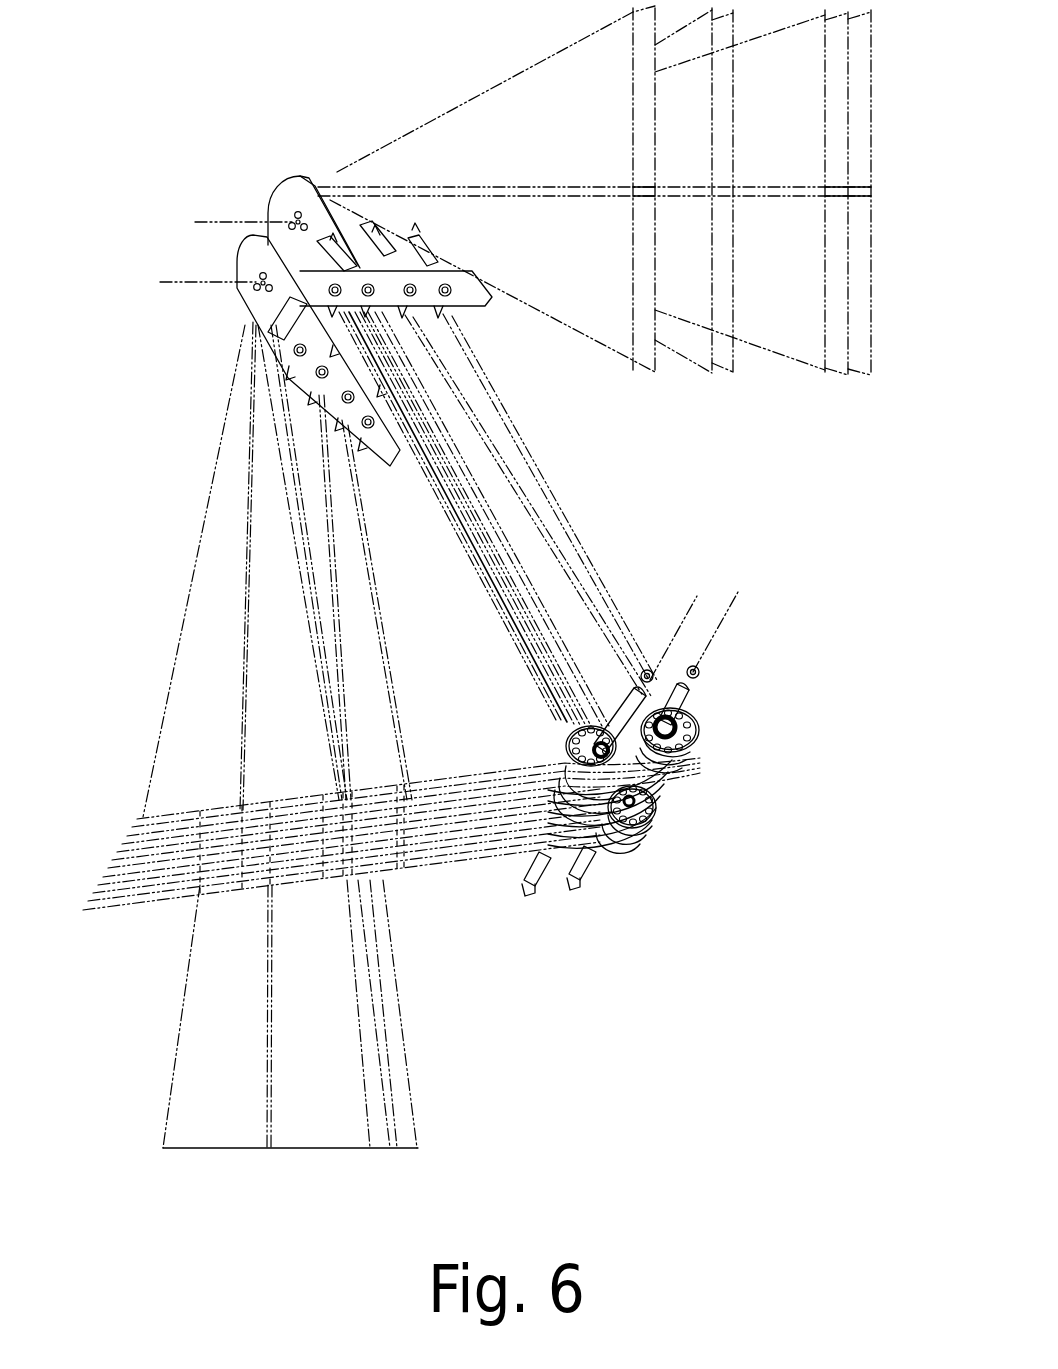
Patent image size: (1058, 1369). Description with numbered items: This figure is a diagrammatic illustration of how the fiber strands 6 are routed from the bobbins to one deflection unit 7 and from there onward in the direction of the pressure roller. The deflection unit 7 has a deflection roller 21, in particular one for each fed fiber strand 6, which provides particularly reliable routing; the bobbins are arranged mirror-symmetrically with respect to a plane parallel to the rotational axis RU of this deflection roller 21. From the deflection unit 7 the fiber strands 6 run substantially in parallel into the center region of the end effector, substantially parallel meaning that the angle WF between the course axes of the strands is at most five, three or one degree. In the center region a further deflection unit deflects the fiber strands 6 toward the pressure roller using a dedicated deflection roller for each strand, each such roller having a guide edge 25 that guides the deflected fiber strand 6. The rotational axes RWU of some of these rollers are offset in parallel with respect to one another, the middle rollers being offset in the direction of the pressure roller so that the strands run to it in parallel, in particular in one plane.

The fiber strands 6 is at (133, 828).
The deflection unit 7 is at (218, 158).
The deflection roller 21 is at (339, 190).
The guide edge 25 is at (556, 757).
The rotational axis of the deflection roller RU is at (183, 280).
The angle between the course axes of the fiber strands WF is at (494, 397).
The rotational axes of the deflection rollers of the further deflection unit RWU is at (718, 627).